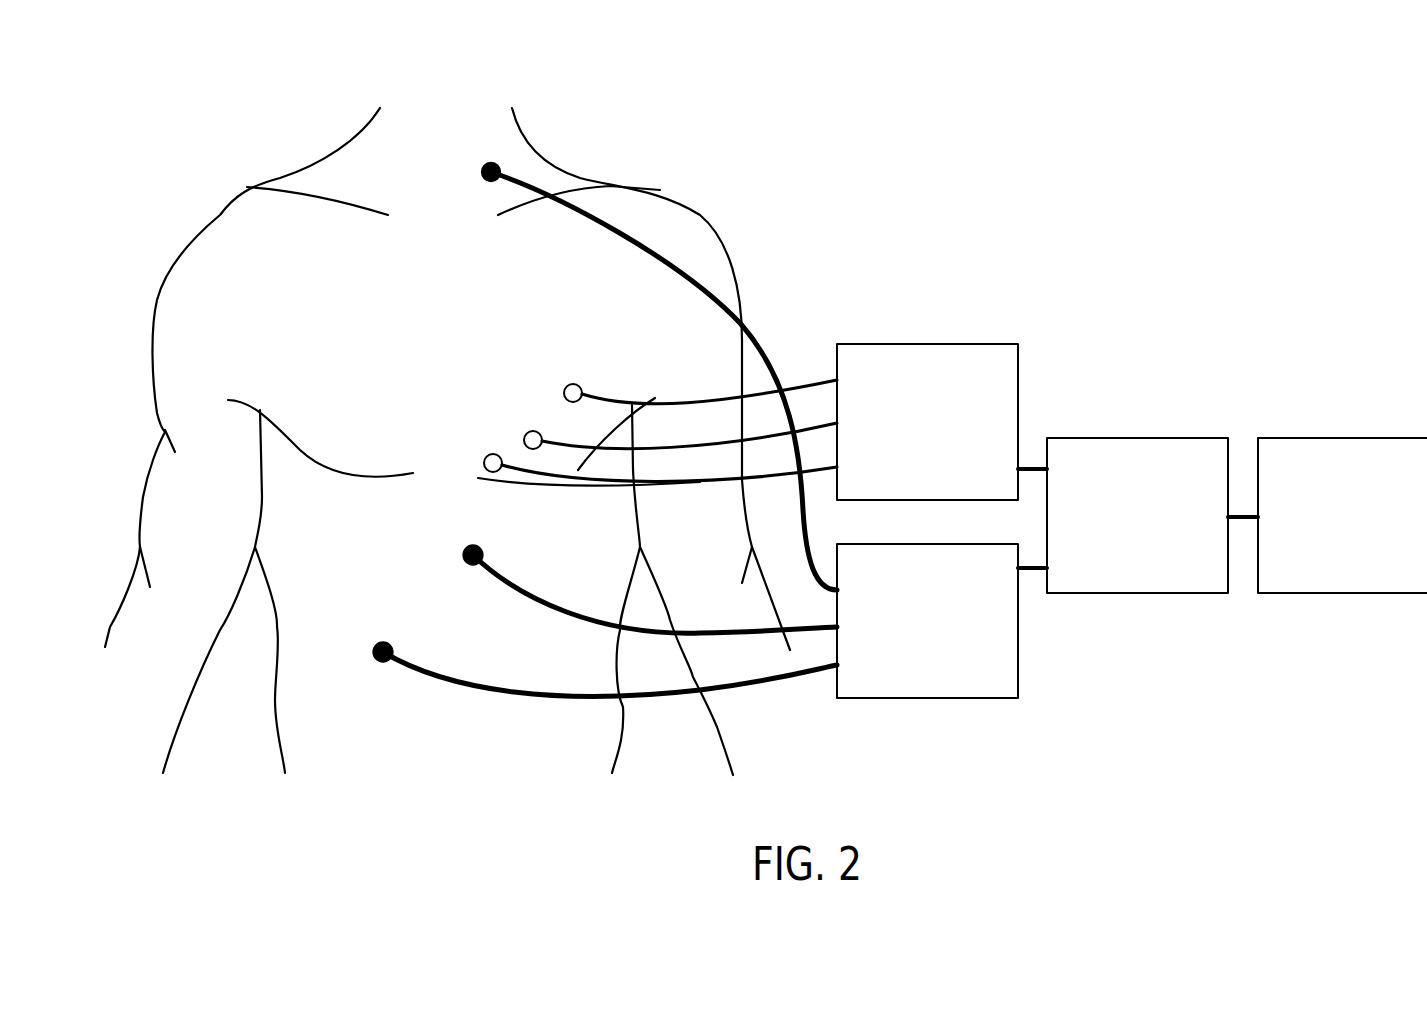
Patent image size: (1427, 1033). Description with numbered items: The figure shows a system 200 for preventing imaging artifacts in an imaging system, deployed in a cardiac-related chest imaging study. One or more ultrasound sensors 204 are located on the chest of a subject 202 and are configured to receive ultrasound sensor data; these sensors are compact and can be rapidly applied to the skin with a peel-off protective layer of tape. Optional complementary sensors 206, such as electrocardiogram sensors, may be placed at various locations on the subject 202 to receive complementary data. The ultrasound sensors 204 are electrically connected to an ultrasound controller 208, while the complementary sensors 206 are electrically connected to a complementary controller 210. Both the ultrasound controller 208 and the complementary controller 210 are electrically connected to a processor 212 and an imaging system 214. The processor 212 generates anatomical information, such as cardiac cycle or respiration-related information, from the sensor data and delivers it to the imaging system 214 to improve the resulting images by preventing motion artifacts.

The system 200 is at (209, 74).
The subject 202 is at (592, 283).
The ultrasound sensor 204 is at (535, 431).
The complementary sensor 206 is at (487, 182).
The ultrasound controller 208 is at (927, 422).
The complementary controller 210 is at (695, 621).
The processor 212 is at (1137, 515).
The imaging system 214 is at (1342, 515).